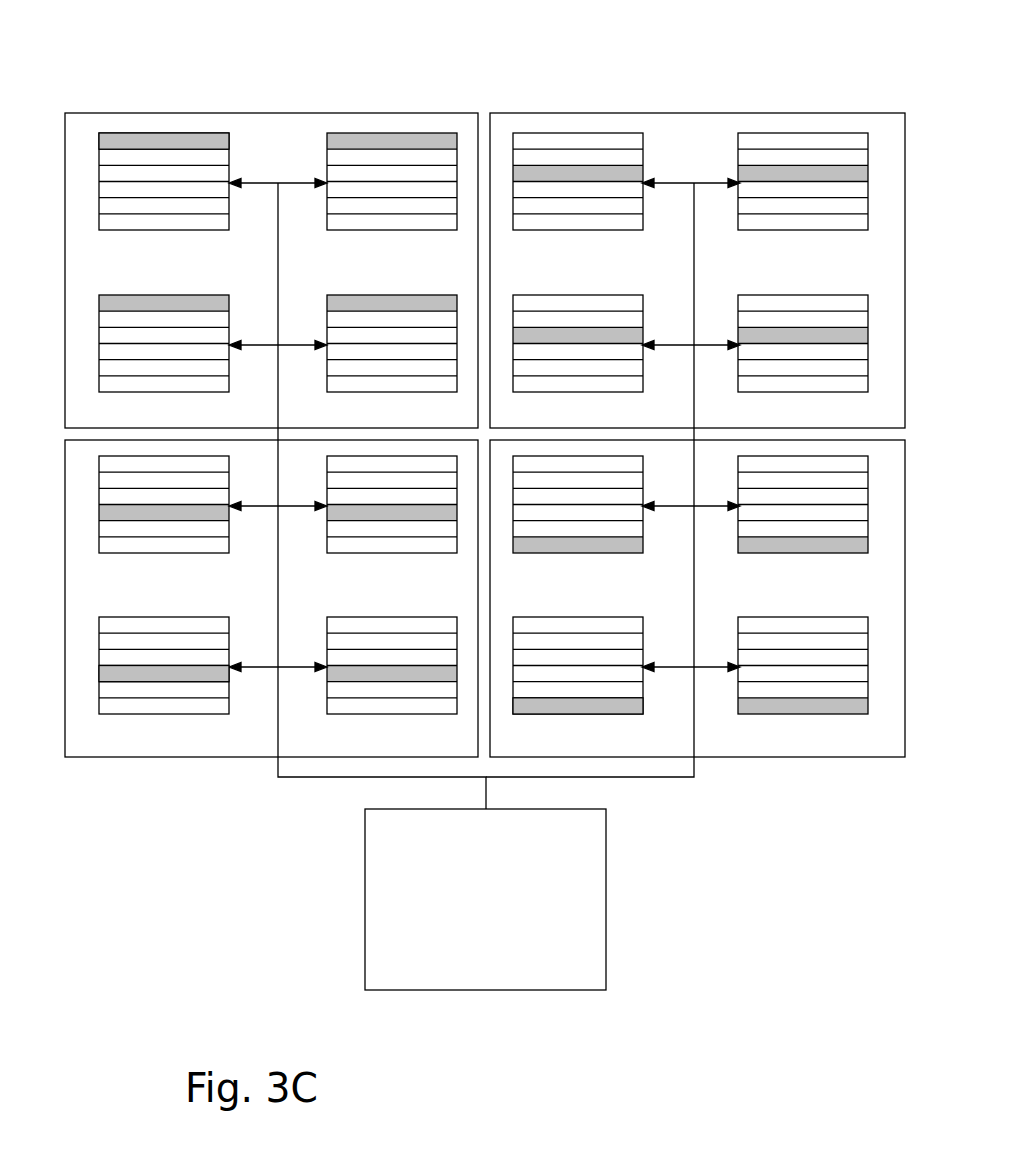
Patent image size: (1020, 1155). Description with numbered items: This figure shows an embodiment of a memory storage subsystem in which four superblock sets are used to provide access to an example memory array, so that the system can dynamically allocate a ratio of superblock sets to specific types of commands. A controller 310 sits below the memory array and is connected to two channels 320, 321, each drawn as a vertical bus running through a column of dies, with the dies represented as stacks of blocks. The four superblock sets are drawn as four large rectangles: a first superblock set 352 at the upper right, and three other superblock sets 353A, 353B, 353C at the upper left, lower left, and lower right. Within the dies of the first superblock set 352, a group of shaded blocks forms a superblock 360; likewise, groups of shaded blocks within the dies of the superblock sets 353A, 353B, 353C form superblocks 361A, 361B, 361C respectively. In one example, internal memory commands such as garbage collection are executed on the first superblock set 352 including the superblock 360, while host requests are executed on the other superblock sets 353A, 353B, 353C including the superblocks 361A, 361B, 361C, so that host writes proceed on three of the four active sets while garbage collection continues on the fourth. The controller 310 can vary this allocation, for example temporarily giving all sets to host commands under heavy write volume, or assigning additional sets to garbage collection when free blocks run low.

The controller 310 is at (606, 905).
The channel 320 is at (283, 730).
The channel 321 is at (695, 730).
The first superblock set 352 is at (697, 217).
The superblock set 353A is at (174, 113).
The superblock set 353B is at (195, 757).
The superblock set 353C is at (900, 757).
The superblock 360 is at (738, 173).
The superblock 361A is at (229, 140).
The superblock 361B is at (99, 673).
The superblock 361C is at (643, 704).